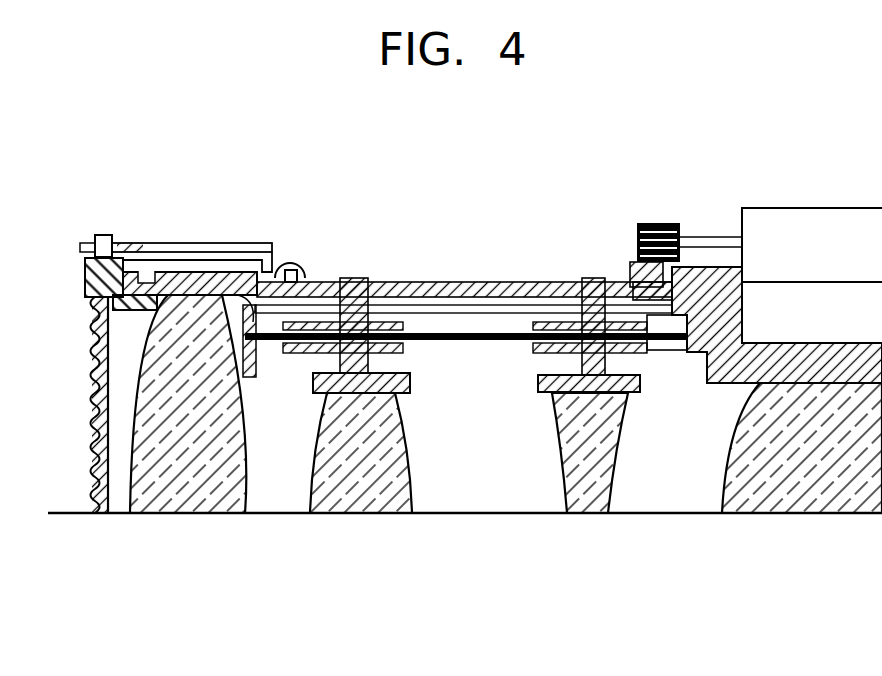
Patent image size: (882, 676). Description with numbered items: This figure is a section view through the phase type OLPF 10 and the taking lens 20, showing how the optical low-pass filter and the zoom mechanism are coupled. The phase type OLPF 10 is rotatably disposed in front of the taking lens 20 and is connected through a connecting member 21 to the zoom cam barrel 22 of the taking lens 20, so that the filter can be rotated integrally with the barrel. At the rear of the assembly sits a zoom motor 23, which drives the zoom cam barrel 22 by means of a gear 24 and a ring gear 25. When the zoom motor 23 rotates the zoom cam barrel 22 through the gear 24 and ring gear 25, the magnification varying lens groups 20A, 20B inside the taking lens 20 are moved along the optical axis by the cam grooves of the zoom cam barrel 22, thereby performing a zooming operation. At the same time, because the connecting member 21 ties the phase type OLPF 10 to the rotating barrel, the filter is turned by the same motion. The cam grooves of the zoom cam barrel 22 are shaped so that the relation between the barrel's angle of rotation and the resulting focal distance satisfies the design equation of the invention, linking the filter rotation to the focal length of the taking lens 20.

The phase type OLPF 10 is at (88, 437).
The taking lens 20 is at (224, 543).
The magnification varying lens group 20A is at (308, 493).
The magnification varying lens group 20B is at (563, 492).
The connecting member 21 is at (200, 248).
The zoom cam barrel 22 is at (326, 282).
The zoom motor 23 is at (812, 208).
The gear 24 is at (661, 223).
The ring gear 25 is at (630, 262).